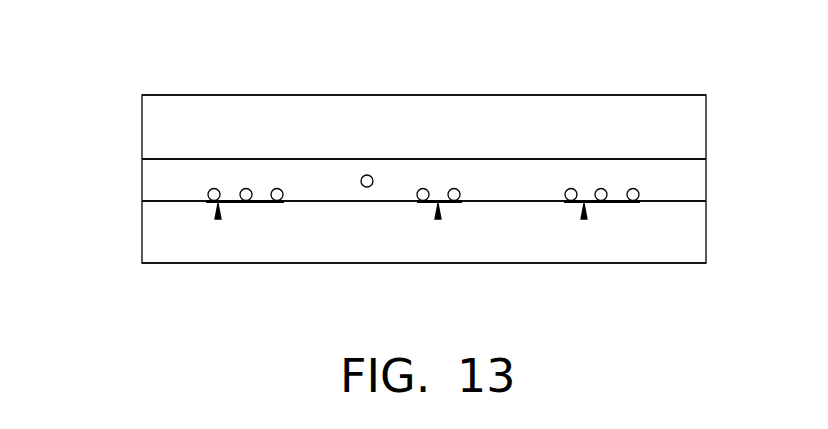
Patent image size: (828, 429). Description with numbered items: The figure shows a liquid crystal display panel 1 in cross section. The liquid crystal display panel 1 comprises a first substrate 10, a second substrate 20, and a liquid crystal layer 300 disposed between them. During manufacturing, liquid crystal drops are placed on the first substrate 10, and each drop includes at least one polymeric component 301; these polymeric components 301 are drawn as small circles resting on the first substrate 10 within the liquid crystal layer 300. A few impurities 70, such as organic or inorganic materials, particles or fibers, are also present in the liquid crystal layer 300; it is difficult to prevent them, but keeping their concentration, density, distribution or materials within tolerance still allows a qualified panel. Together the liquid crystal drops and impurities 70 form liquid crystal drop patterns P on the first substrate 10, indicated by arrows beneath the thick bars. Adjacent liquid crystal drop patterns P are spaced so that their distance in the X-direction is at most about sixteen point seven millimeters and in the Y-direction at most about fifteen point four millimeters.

The liquid crystal display panel 1 is at (38, 62).
The first substrate 10 is at (702, 232).
The second substrate 20 is at (702, 127).
The liquid crystal layer 300 is at (702, 179).
The polymeric component 301 is at (278, 188).
The impurities 70 is at (367, 175).
The liquid crystal drop patterns P is at (218, 218).